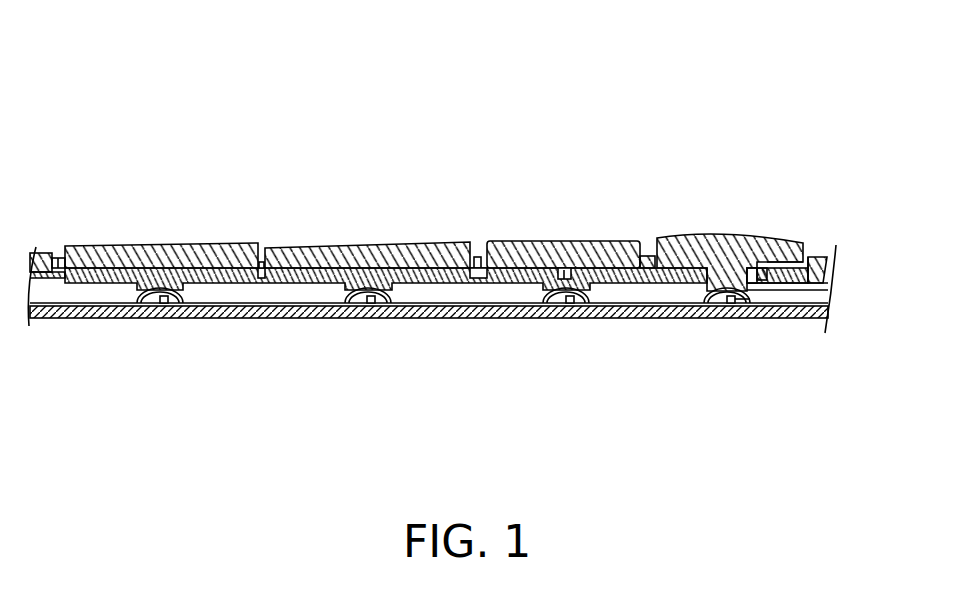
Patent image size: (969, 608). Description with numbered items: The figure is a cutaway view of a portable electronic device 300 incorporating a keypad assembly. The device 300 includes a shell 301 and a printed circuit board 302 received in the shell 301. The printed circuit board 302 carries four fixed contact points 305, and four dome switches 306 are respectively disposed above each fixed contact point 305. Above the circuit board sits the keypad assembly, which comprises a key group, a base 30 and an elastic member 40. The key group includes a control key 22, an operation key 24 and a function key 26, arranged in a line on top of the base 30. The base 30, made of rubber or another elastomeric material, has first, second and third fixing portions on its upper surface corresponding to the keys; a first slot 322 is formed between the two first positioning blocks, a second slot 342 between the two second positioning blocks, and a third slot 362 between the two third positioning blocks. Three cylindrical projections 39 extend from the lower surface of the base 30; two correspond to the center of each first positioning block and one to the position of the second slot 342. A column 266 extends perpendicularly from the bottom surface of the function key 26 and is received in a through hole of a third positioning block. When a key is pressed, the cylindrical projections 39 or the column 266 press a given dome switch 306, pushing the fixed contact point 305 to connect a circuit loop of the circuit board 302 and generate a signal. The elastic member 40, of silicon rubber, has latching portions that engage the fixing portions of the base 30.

The portable electronic device 300 is at (507, 46).
The elastic member 40 is at (61, 249).
The control key 22 is at (138, 245).
The first slot 322 is at (263, 251).
The operation key 24 is at (510, 246).
The second slot 342 is at (566, 262).
The function key 26 is at (663, 242).
The third slot 362 is at (758, 264).
The shell 301 is at (813, 252).
The cylindrical projections 39 is at (173, 306).
The base 30 is at (304, 279).
The printed circuit board 302 is at (431, 312).
The dome switches 306 is at (554, 308).
The fixed contact points 305 is at (721, 309).
The column 266 is at (751, 308).